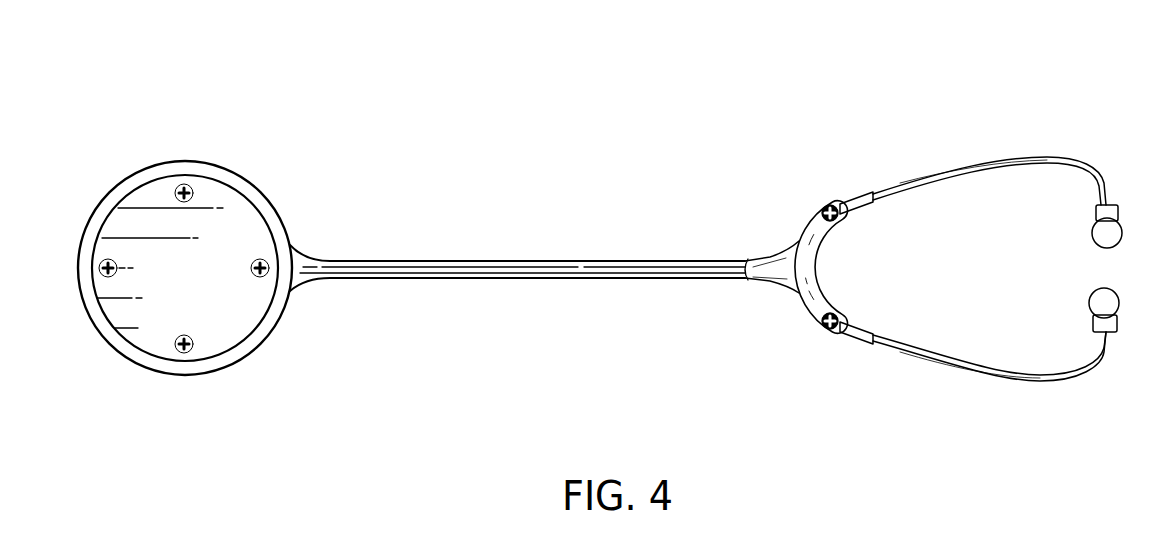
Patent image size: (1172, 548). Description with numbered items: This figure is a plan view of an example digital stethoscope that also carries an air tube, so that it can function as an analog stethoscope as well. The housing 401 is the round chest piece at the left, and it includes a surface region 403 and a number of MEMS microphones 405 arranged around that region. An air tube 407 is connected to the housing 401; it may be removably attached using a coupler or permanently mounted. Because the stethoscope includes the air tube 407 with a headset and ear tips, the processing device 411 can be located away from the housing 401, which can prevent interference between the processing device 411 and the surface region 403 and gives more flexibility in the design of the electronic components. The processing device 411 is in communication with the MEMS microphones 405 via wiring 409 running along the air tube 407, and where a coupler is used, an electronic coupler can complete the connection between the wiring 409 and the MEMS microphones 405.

The housing 401 is at (184, 162).
The surface region 403 is at (242, 315).
The MEMS microphones 405 is at (112, 276).
The air tube 407 is at (1103, 80).
The wiring 409 is at (553, 268).
The processing device 411 is at (817, 215).